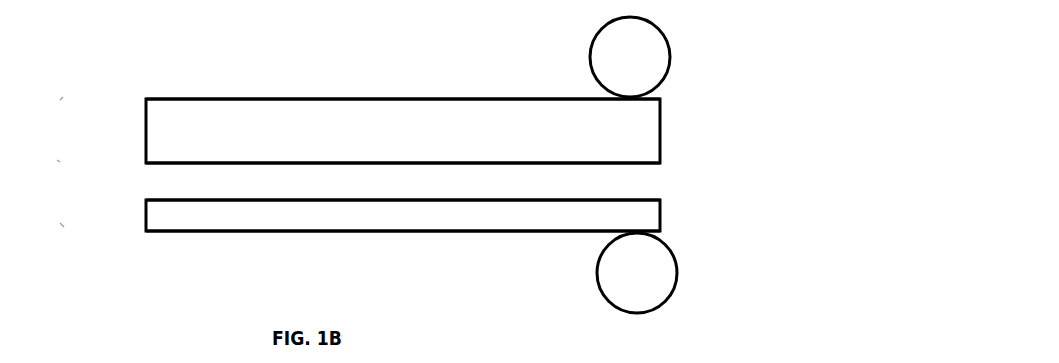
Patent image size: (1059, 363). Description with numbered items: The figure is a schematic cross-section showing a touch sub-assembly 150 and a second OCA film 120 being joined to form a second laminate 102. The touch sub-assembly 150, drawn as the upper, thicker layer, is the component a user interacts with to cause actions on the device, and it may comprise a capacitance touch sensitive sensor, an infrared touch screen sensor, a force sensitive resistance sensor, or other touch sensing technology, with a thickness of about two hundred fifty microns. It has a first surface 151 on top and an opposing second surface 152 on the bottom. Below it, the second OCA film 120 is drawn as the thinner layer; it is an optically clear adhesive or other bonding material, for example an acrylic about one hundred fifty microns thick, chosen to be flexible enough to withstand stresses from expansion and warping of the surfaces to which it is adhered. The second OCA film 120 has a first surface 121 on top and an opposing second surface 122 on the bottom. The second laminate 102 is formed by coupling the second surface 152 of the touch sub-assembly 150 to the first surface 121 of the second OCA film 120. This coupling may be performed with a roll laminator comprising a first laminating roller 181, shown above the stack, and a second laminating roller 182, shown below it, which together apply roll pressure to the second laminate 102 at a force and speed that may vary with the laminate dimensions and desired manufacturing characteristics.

The second laminate 102 is at (42, 162).
The second OCA film 120 is at (661, 213).
The first surface of the second OCA film 121 is at (465, 198).
The second surface of the second OCA film 122 is at (467, 232).
The touch sub-assembly 150 is at (661, 133).
The first surface of the touch sub-assembly 151 is at (212, 98).
The second surface of the touch sub-assembly 152 is at (213, 165).
The first laminating roller 181 is at (671, 60).
The second laminating roller 182 is at (678, 273).